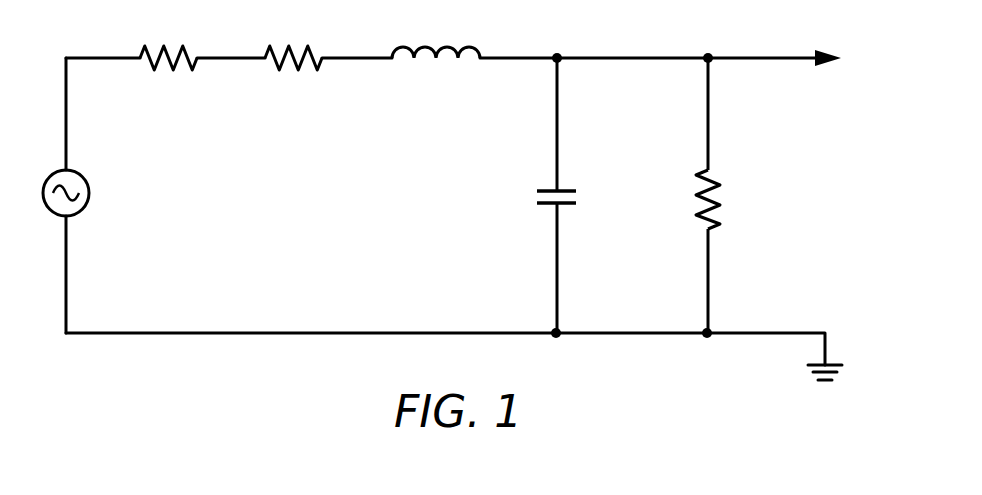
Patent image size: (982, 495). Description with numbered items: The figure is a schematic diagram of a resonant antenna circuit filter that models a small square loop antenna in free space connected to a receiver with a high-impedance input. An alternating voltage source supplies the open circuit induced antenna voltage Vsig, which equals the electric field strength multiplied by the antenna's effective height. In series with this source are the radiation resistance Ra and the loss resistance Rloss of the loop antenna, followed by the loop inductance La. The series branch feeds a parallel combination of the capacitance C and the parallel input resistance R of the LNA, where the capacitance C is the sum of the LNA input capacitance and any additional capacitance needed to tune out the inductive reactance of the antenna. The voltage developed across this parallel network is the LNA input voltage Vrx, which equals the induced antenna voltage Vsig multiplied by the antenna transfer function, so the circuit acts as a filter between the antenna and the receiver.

The radiation resistance Ra is at (168, 77).
The loss resistance Rloss is at (293, 77).
The loop inductance La is at (436, 78).
The open circuit induced antenna voltage Vsig is at (106, 194).
The capacitance C is at (571, 195).
The parallel input resistance of the LNA R is at (720, 195).
The LNA input voltage Vrx is at (847, 202).